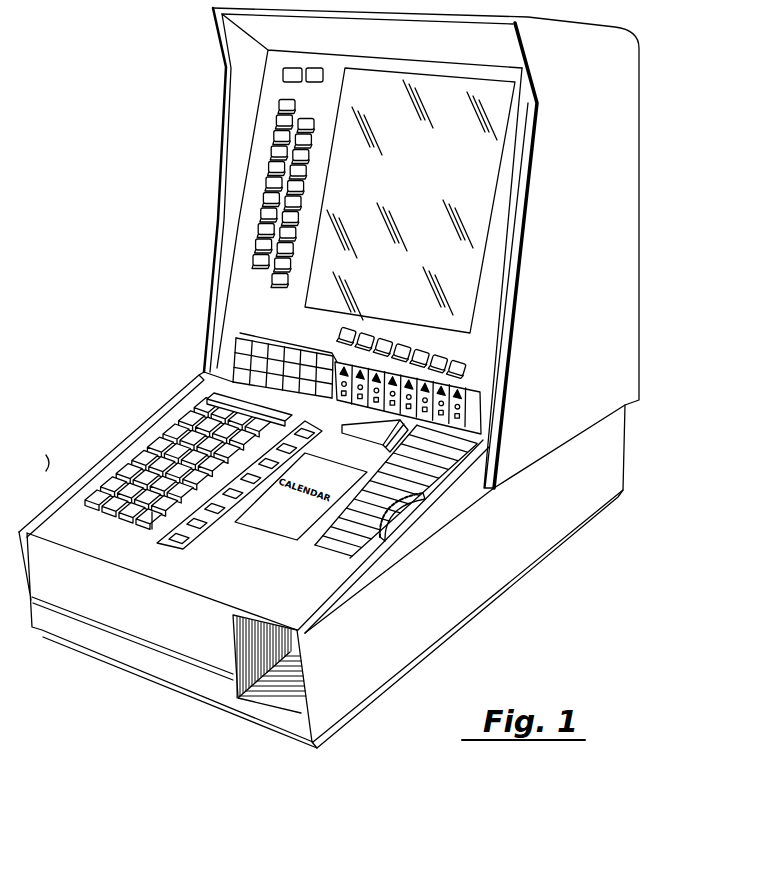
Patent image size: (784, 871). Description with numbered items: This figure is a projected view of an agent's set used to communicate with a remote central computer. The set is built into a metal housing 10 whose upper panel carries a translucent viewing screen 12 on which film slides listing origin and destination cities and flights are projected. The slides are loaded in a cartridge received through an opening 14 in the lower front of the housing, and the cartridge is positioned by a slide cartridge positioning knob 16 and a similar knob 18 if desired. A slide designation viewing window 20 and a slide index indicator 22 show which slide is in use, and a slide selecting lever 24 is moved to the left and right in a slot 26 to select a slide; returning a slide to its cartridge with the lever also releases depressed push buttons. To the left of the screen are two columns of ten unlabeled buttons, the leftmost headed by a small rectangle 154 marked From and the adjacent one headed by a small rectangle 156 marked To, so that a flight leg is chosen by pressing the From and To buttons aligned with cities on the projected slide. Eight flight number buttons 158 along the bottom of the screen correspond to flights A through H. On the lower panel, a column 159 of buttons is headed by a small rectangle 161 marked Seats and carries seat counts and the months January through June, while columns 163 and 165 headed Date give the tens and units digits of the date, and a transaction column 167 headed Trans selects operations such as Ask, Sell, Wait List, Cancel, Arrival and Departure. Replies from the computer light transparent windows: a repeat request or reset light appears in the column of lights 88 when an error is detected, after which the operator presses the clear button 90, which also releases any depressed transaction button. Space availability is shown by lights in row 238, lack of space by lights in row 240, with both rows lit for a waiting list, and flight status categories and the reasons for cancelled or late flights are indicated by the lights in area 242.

The metal housing 10 is at (639, 222).
The translucent viewing screen 12 is at (400, 222).
The opening 14 is at (290, 708).
The slide cartridge positioning knob 16 is at (385, 530).
The similar knob 18 is at (161, 470).
The slide designation viewing window 20 is at (348, 532).
The slide index indicator 22 is at (398, 462).
The slide selecting lever 24 is at (383, 443).
The slot 26 is at (348, 432).
The column of lights 88 is at (165, 556).
The clear button 90 is at (153, 530).
The small rectangle marked 'From' 154 is at (289, 67).
The small rectangle marked 'To' 156 is at (316, 67).
The flight number buttons 158 is at (481, 361).
The column of buttons 159 is at (81, 516).
The small rectangle marked 'Seats' 161 is at (212, 396).
The column of buttons 163 is at (99, 522).
The column of buttons 165 is at (113, 530).
The transaction column 167 is at (136, 532).
The row of lights 238 is at (489, 414).
The row of lights 240 is at (488, 430).
The area of lights 242 is at (288, 337).